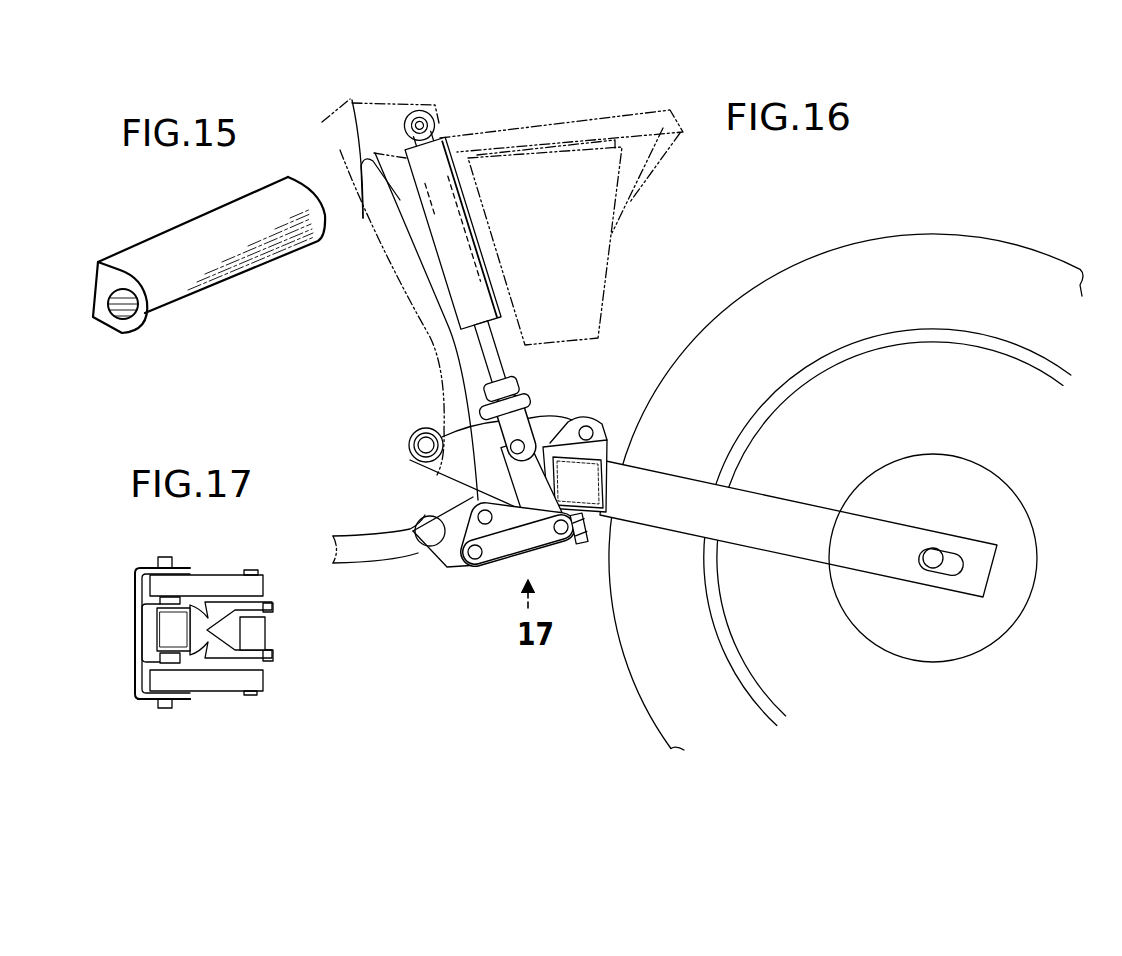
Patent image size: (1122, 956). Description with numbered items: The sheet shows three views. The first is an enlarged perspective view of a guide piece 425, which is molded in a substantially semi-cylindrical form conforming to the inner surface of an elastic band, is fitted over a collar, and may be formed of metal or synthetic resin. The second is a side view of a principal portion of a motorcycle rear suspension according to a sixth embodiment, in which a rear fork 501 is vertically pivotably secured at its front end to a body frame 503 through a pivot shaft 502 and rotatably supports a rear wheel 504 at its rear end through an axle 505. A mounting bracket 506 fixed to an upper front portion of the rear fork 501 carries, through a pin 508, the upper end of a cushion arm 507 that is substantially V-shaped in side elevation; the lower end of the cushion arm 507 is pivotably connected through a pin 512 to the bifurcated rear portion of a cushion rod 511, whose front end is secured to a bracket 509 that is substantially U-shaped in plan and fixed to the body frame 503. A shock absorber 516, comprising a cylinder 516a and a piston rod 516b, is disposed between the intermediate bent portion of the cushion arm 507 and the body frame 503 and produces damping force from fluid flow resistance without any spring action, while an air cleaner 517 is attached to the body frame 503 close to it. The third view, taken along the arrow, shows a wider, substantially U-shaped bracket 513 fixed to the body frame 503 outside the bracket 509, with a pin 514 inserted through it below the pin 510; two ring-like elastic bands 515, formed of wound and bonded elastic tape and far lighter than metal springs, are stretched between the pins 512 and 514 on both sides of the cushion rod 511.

In FIG. 15, the guide piece 425 is at (262, 210).
In FIG. 16, the rear fork 501 is at (812, 518).
In FIG. 16, the pivot shaft 502 is at (424, 448).
In FIG. 16, the body frame 503 is at (410, 290).
In FIG. 16, the rear wheel 504 is at (841, 271).
In FIG. 16, the axle 505 is at (936, 566).
In FIG. 16, the mounting bracket 506 is at (606, 456).
In FIG. 16, the cushion arm 507 is at (553, 420).
In FIG. 17, the cushion arm 507 is at (258, 634).
In FIG. 16, the pin 508 is at (593, 426).
In FIG. 16, the bracket 509 is at (450, 553).
In FIG. 17, the bracket 509 is at (150, 660).
In FIG. 16, the pin 510 is at (485, 510).
In FIG. 17, the pin 510 is at (231, 631).
In FIG. 16, the cushion rod 511 is at (507, 522).
In FIG. 17, the cushion rod 511 is at (168, 629).
In FIG. 16, the pin 512 is at (562, 534).
In FIG. 17, the pin 512 is at (253, 695).
In FIG. 17, the bracket 513 is at (147, 700).
In FIG. 16, the pin 514 is at (474, 558).
In FIG. 17, the pin 514 is at (164, 557).
In FIG. 17, the elastic band 515 is at (224, 585).
In FIG. 16, the shock absorber 516 is at (423, 229).
In FIG. 16, the cylinder 516a is at (445, 162).
In FIG. 16, the piston rod 516b is at (493, 354).
In FIG. 16, the air cleaner 517 is at (592, 285).